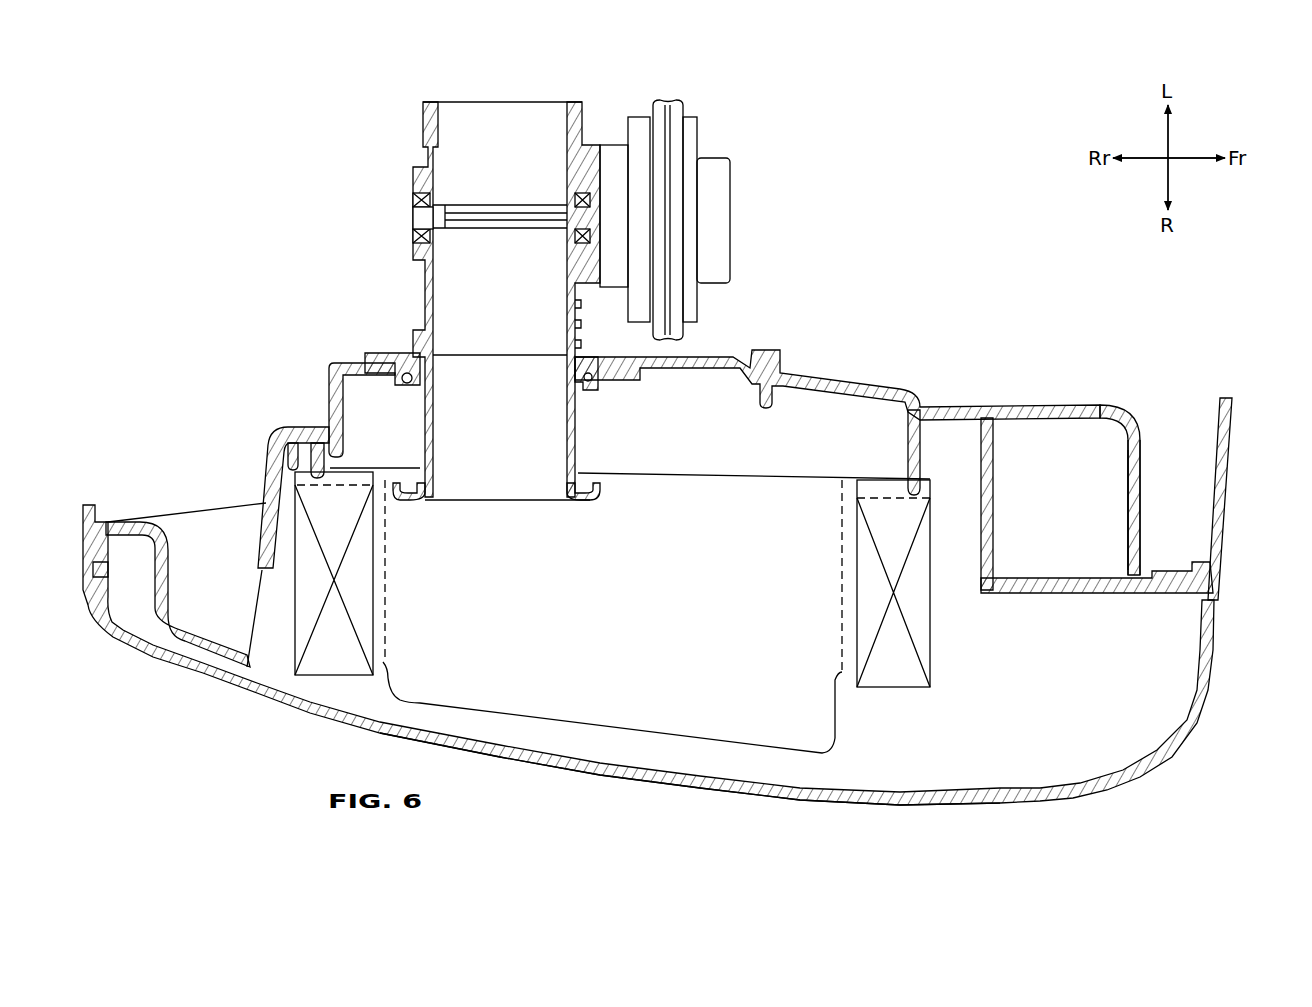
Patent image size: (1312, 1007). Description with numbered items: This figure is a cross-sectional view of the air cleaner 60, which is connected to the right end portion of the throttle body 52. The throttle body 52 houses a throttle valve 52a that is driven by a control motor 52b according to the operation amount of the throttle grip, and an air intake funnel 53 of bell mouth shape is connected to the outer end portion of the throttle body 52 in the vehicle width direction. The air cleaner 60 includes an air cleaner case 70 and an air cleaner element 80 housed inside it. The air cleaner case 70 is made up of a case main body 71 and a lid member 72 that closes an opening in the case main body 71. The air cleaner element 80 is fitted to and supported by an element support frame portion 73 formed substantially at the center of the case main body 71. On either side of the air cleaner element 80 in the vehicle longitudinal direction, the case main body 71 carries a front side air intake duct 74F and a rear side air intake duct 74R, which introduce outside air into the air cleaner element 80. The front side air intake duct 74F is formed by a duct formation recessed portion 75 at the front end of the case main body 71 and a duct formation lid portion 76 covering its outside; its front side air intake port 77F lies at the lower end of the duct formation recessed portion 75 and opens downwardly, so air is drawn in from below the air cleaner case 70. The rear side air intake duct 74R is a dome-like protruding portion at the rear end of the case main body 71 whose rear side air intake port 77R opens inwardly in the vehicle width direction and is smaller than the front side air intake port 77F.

The throttle body 52 is at (676, 100).
The throttle valve 52a is at (487, 217).
The control motor 52b is at (668, 218).
The air intake funnel 53 is at (420, 427).
The air cleaner 60 is at (1222, 569).
The air cleaner case 70 is at (1208, 632).
The case main body 71 is at (843, 378).
The lid member 72 is at (1162, 752).
The element support frame portion 73 is at (300, 470).
The front side air intake duct 74F is at (1077, 477).
The rear side air intake duct 74R is at (223, 607).
The duct formation recessed portion 75 is at (1052, 410).
The duct formation lid portion 76 is at (1057, 593).
The front side air intake port 77F is at (1100, 488).
The rear side air intake port 77R is at (210, 512).
The air cleaner element 80 is at (888, 694).